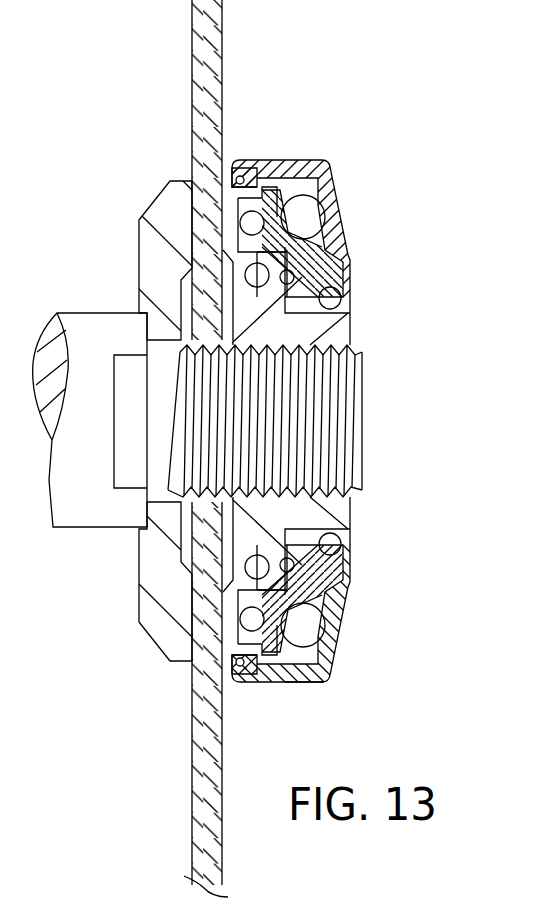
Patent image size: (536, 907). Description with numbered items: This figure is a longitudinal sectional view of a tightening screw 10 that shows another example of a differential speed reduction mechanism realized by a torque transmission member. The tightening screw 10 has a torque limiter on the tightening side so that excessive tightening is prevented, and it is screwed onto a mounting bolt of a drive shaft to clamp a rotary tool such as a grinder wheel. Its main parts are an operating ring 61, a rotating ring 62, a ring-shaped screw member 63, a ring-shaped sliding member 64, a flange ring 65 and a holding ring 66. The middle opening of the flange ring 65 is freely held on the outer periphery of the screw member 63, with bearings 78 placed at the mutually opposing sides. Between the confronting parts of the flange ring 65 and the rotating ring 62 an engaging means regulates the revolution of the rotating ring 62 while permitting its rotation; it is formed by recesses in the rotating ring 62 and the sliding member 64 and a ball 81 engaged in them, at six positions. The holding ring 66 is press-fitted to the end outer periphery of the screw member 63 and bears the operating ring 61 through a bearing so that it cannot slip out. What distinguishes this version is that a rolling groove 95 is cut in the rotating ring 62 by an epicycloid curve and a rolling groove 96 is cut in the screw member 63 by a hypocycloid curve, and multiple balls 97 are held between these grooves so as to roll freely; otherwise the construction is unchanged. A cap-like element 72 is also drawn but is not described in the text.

The tightening screw 10 is at (343, 121).
The operating ring 61 is at (330, 172).
The rotating ring 62 is at (341, 296).
The ring-shaped screw member 63 is at (352, 326).
The ring-shaped sliding member 64 is at (243, 178).
The flange ring 65 is at (170, 181).
The holding ring 66 is at (352, 548).
The housing cap 72 is at (320, 677).
The bearings 78 is at (250, 573).
The ball 81 is at (280, 553).
The rolling groove 95 is at (300, 565).
The rolling groove 96 is at (327, 578).
The balls 97 is at (264, 274).